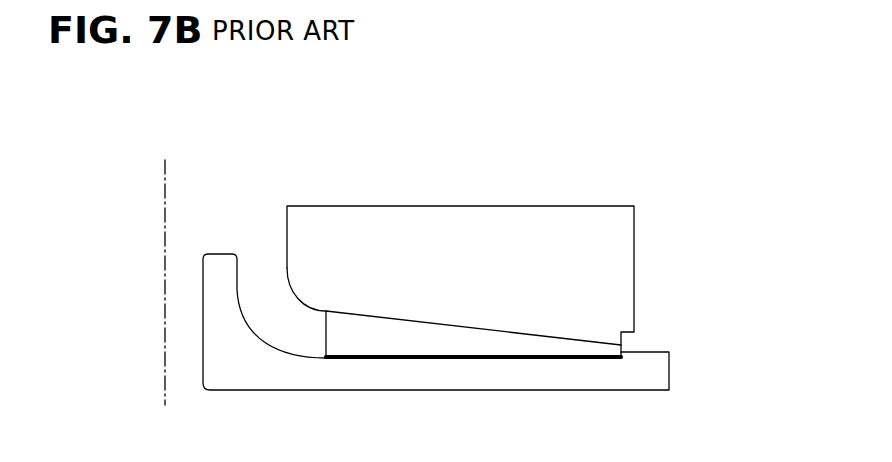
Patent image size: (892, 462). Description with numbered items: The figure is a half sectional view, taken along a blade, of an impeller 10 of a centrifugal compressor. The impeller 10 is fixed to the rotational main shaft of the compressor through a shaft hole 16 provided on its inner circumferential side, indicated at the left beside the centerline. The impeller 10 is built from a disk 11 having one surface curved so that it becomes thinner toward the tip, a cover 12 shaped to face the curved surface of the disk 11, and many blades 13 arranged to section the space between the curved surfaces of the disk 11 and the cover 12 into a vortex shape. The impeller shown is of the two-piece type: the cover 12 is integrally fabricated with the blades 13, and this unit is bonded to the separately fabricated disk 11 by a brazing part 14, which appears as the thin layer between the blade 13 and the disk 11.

The impeller 10 is at (481, 133).
The disk 11 is at (274, 390).
The cover 12 is at (555, 205).
The blade 13 is at (326, 329).
The brazing part 14 is at (373, 365).
The shaft hole 16 is at (203, 335).